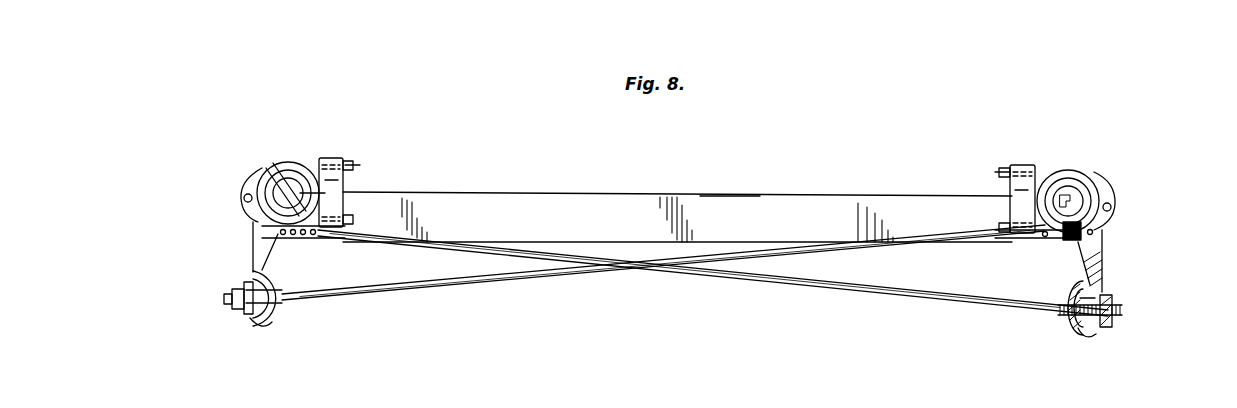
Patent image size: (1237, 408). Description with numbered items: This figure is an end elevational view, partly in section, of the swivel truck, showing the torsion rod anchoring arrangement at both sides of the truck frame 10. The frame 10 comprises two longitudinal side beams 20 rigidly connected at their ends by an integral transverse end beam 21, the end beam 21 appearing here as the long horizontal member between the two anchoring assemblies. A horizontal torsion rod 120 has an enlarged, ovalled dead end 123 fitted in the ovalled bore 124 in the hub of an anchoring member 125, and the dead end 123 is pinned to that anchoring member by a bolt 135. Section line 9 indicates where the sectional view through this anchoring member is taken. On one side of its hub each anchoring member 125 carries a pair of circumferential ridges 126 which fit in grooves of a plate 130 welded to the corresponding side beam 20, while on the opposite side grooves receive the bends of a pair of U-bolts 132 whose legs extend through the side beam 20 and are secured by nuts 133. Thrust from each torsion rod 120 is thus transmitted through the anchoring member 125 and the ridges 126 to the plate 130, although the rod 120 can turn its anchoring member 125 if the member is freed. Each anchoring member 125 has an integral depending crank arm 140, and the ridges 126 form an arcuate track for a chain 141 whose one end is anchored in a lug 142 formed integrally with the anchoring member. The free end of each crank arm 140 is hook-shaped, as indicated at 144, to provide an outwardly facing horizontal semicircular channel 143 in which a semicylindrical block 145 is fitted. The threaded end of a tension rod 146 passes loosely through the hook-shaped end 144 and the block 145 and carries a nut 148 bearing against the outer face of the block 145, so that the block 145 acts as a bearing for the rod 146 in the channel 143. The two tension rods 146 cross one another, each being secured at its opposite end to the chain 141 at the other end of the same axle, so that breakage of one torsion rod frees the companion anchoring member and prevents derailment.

The section line 9- 9 is at (193, 138).
The truck frame 10 is at (662, 190).
The longitudinal side beam 20 is at (333, 157).
The transverse end beam 21 is at (728, 208).
The torsion rod 120 is at (300, 170).
The dead end 123 is at (338, 184).
The ovalled bore 124 is at (345, 192).
The anchoring member 125 is at (259, 181).
The circumferential ridges 126 is at (272, 160).
The plate 130 is at (340, 197).
The U-bolts 132 is at (326, 184).
The nuts 133 is at (350, 162).
The bolt 135 is at (253, 152).
The depending crank arm 140 is at (254, 253).
The chain 141 is at (290, 238).
The lug 142 is at (257, 183).
The semicircular channel 143 is at (247, 280).
The hook-shaped end 144 is at (255, 328).
The semicylindrical block 145 is at (264, 307).
The tension rod 146 is at (542, 253).
The nut 148 is at (247, 316).